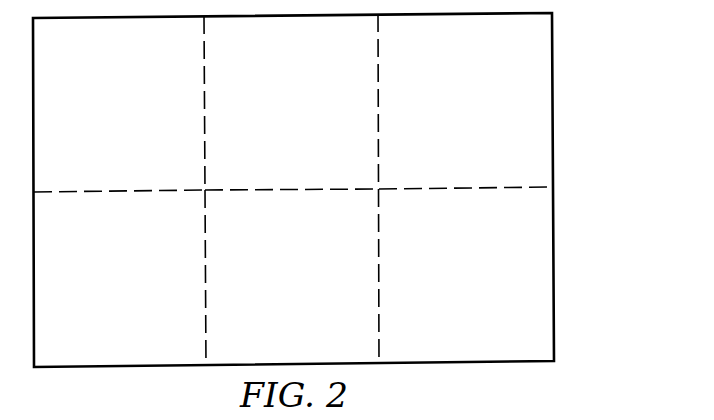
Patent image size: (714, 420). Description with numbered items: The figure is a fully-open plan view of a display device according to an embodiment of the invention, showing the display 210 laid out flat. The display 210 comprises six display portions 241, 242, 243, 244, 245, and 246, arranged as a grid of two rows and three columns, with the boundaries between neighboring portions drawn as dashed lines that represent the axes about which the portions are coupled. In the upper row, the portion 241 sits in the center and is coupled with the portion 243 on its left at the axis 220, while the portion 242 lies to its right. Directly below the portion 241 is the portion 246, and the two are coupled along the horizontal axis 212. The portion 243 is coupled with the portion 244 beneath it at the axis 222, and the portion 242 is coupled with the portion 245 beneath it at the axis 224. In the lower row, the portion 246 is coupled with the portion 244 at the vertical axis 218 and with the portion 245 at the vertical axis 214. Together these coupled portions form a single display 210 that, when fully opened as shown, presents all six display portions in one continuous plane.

The display 210 is at (558, 85).
The axis 212 is at (300, 189).
The axis 214 is at (380, 320).
The axis 218 is at (205, 324).
The axis 220 is at (204, 58).
The axis 222 is at (121, 191).
The axis 224 is at (462, 188).
The display portion 241 is at (312, 116).
The display portion 242 is at (486, 115).
The display portion 243 is at (140, 118).
The display portion 244 is at (140, 292).
The display portion 245 is at (487, 287).
The display portion 246 is at (313, 289).